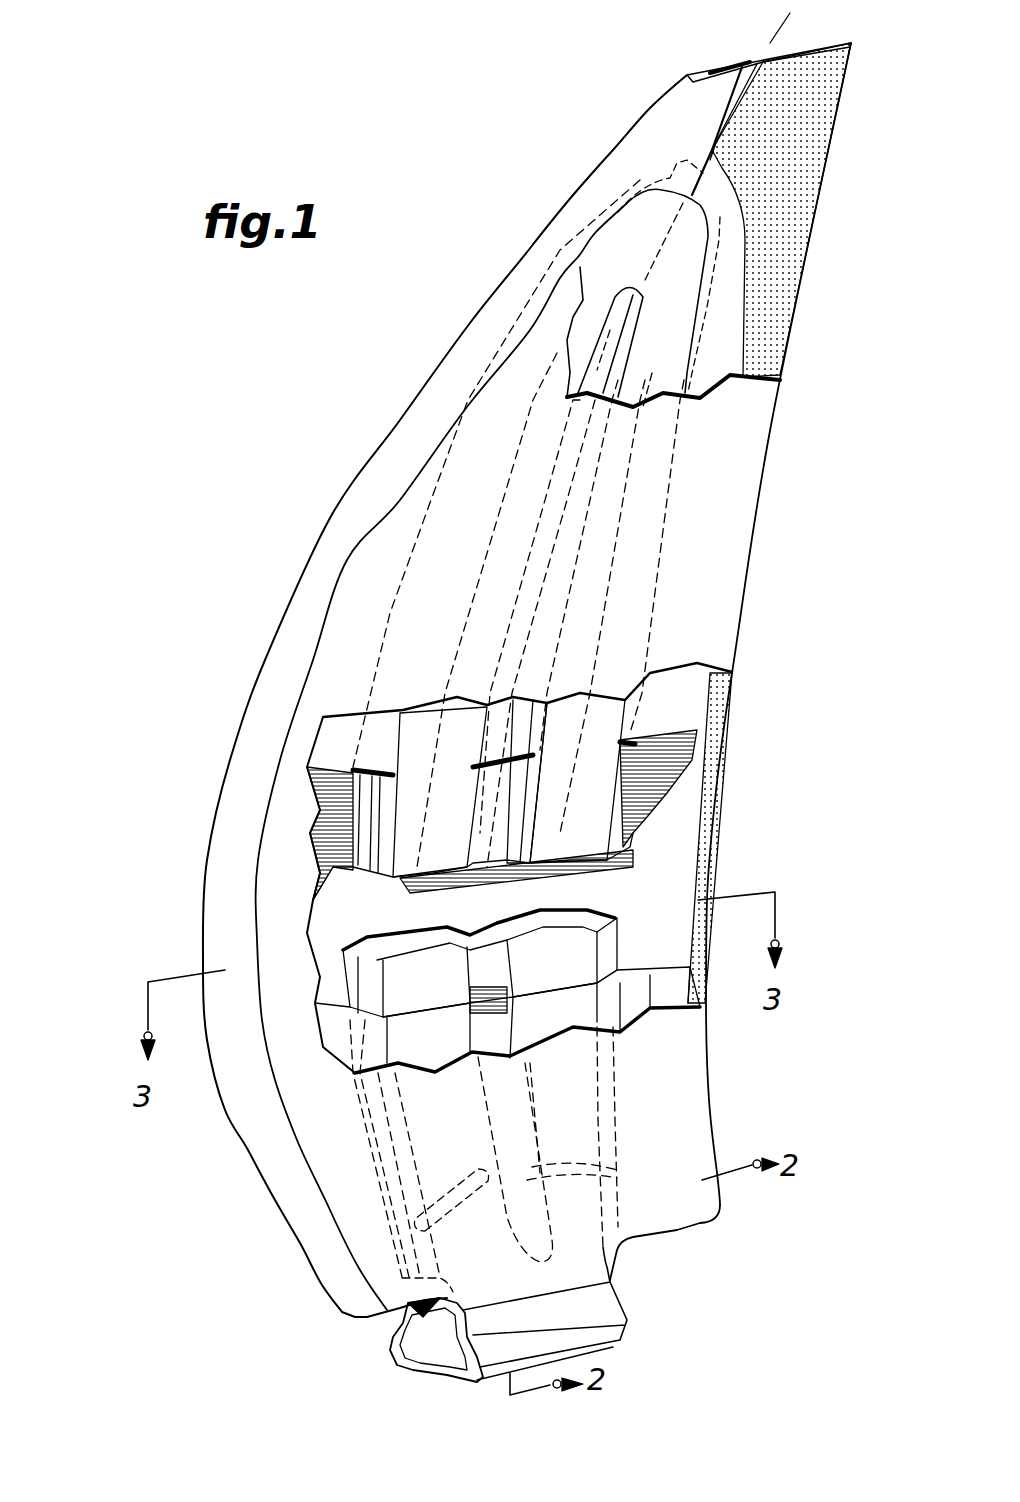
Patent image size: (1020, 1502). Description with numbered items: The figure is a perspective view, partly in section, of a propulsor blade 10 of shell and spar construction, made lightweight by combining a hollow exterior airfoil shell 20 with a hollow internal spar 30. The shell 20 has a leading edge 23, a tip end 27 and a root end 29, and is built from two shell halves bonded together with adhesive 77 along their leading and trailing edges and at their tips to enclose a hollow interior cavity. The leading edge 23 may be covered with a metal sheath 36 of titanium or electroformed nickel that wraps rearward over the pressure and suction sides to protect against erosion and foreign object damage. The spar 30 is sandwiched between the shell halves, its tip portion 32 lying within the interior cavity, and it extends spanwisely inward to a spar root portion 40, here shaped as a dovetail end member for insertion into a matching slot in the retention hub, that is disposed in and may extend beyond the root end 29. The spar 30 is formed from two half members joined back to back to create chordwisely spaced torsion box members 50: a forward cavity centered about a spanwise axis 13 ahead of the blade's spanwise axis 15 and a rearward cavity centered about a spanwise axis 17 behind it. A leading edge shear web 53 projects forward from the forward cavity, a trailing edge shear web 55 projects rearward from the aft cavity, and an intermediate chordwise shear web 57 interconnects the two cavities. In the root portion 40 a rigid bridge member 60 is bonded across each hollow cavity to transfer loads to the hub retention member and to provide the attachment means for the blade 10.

The propulsor blade 10 is at (352, 403).
The spanwise axis 13 is at (463, 608).
The spanwise axis of the blade 15 is at (775, 38).
The spanwise axis 17 is at (607, 597).
The exterior airfoil shell 20 is at (733, 672).
The leading edge 23 is at (528, 250).
The tip end 27 is at (712, 67).
The root end 29 is at (683, 1233).
The internal spar 30 is at (640, 787).
The tip portion 32 is at (683, 297).
The metal sheath 36 is at (255, 1083).
The spar root portion 40 is at (433, 1377).
The torsion box members 50 is at (593, 920).
The leading edge shear web 53 is at (353, 970).
The trailing edge shear web 55 is at (610, 945).
The intermediate chordwise shear web 57 is at (480, 927).
The rigid bridge member 60 is at (397, 1353).
The adhesive 77 is at (767, 260).